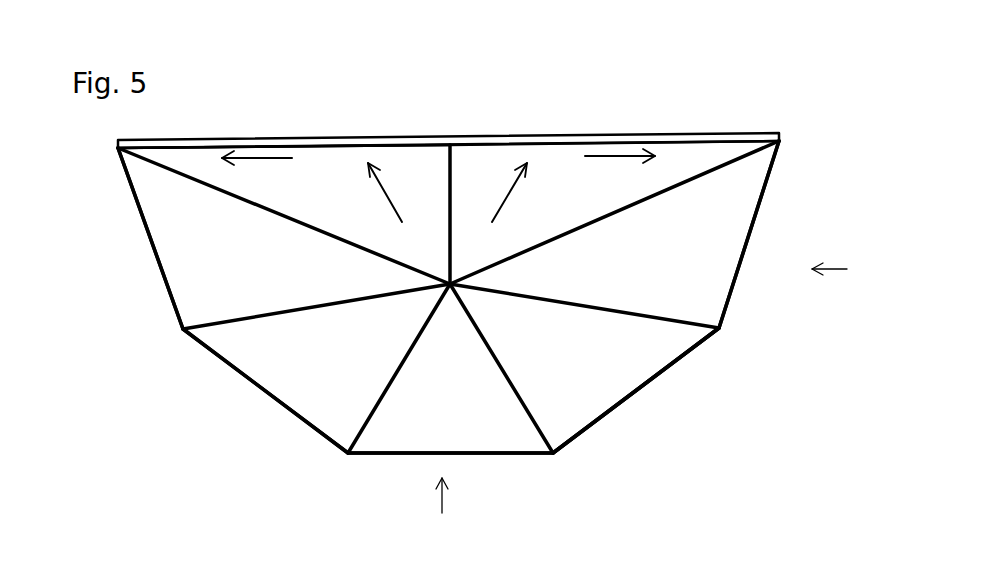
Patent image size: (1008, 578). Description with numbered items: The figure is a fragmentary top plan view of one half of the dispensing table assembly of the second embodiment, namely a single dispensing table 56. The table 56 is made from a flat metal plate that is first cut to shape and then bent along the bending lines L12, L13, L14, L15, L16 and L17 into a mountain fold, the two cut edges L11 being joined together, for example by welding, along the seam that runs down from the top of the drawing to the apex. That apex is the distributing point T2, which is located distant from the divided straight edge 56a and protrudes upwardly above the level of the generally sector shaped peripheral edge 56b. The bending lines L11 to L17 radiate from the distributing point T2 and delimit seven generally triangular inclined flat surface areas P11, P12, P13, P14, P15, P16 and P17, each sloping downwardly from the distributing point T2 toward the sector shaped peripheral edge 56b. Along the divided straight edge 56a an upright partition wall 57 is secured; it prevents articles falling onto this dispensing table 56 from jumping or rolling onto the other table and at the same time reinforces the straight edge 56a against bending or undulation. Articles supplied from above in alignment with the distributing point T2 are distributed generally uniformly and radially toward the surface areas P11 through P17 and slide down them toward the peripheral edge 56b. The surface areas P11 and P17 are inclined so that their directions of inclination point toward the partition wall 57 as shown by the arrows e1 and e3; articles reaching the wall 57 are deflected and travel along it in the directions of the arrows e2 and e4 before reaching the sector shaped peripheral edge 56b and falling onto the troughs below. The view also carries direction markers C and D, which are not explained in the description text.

The dispensing table 56 is at (790, 227).
The partition wall 57 is at (592, 133).
The divided straight edge 56a is at (333, 150).
The sector shaped peripheral edge 56b is at (665, 372).
The distributing point T2 is at (448, 278).
The cut edge L11 is at (448, 183).
The bending line L12 is at (621, 209).
The bending line L13 is at (622, 313).
The bending line L14 is at (507, 378).
The bending line L15 is at (392, 387).
The bending line L16 is at (238, 323).
The bending line L17 is at (262, 208).
The inclined flat surface area P11 is at (518, 152).
The inclined flat surface area P12 is at (712, 290).
The inclined flat surface area P13 is at (588, 412).
The inclined flat surface area P14 is at (482, 447).
The inclined flat surface area P15 is at (313, 417).
The inclined flat surface area P16 is at (173, 265).
The inclined flat surface area P17 is at (397, 158).
The arrow e1 is at (501, 192).
The arrow e2 is at (620, 167).
The arrow e3 is at (379, 192).
The arrow e4 is at (257, 169).
The direction C is at (441, 508).
The direction D is at (842, 270).